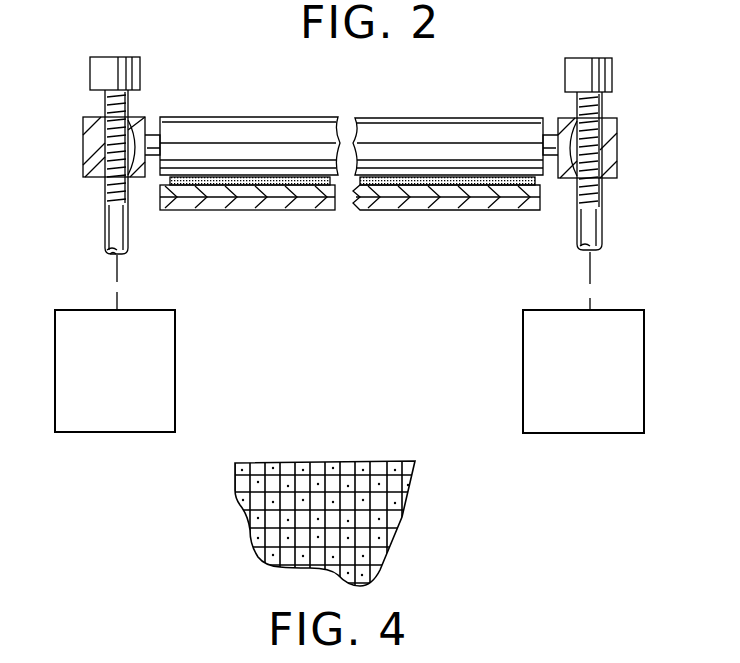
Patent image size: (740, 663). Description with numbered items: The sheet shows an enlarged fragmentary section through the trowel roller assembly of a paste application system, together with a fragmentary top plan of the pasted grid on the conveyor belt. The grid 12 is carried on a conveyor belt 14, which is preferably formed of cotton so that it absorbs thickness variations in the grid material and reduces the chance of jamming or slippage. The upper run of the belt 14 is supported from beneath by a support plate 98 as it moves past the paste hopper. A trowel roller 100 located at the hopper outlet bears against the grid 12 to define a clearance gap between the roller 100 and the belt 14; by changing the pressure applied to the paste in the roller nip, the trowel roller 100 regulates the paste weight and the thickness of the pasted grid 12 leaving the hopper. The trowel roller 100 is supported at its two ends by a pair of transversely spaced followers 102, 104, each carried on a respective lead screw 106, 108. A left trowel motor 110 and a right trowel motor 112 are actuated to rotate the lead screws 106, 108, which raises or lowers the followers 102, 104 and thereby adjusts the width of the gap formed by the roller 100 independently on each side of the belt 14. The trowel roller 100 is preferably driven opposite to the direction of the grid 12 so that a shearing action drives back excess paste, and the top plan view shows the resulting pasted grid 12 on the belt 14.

In FIG. 2, the grid 12 is at (425, 178).
In FIG. 4, the grid 12 is at (408, 467).
In FIG. 2, the conveyor belt 14 is at (252, 192).
In FIG. 4, the conveyor belt 14 is at (372, 462).
In FIG. 2, the support plate 98 is at (430, 205).
In FIG. 2, the trowel roller 100 is at (285, 100).
In FIG. 2, the follower 102 is at (92, 134).
In FIG. 2, the follower 104 is at (617, 137).
In FIG. 2, the lead screw 106 is at (117, 222).
In FIG. 2, the lead screw 108 is at (590, 228).
In FIG. 2, the left trowel motor 110 is at (72, 310).
In FIG. 2, the right trowel motor 112 is at (625, 310).